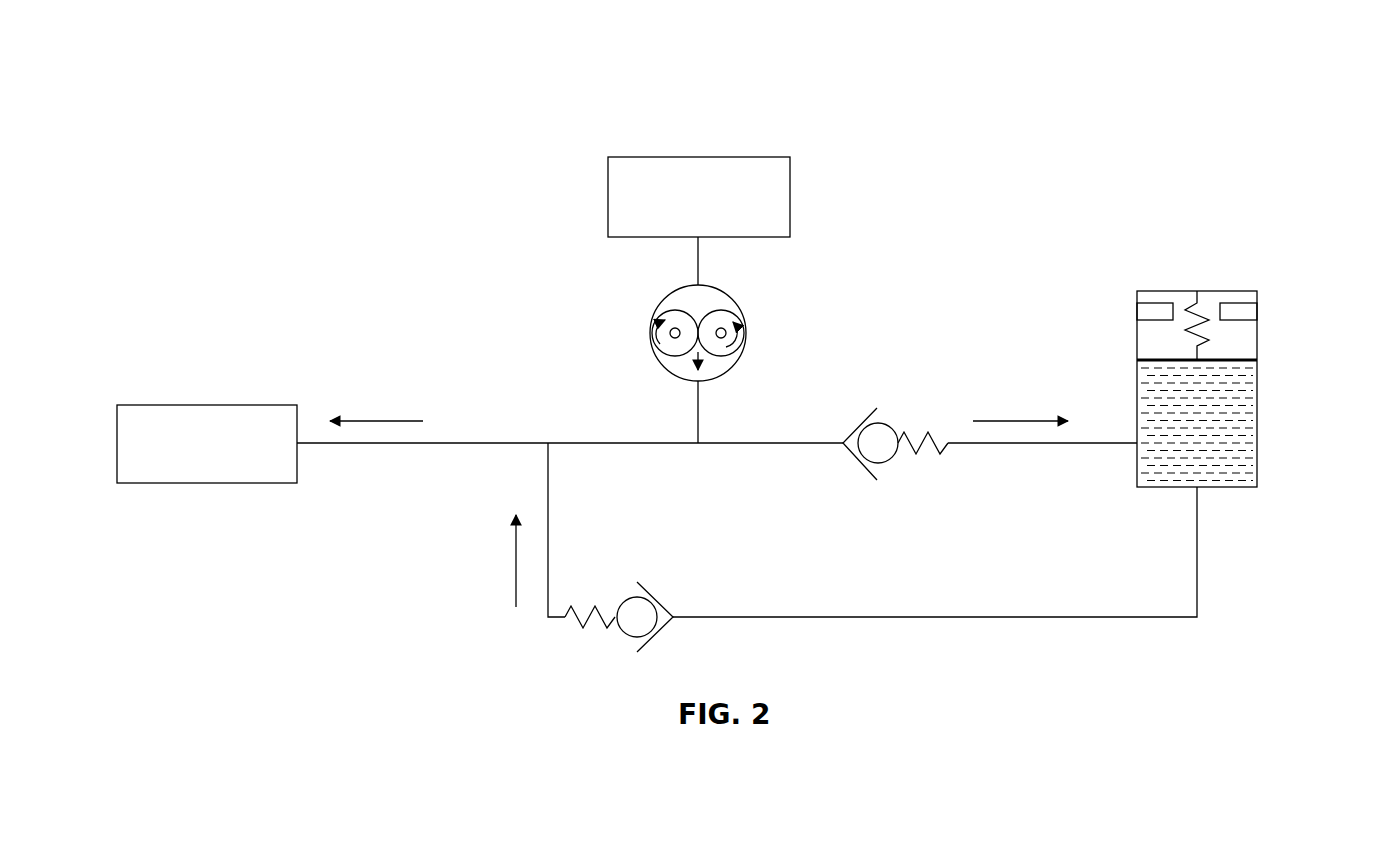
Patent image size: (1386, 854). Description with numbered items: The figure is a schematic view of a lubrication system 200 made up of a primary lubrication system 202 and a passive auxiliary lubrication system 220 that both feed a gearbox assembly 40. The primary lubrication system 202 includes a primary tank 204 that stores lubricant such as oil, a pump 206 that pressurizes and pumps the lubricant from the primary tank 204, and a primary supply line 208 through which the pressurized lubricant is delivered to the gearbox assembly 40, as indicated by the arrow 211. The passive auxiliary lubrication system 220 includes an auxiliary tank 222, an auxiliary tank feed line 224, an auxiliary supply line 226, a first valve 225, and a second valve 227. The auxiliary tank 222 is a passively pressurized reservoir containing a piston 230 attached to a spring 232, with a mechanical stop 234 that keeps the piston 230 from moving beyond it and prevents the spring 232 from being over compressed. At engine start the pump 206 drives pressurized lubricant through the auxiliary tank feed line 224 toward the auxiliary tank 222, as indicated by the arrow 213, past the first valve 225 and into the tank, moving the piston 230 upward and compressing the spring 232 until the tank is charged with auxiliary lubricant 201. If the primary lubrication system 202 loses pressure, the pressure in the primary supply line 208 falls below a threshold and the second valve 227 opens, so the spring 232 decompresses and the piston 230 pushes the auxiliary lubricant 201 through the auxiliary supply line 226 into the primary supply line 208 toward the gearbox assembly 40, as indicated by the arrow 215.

The lubrication system 200 is at (176, 100).
The primary lubrication system 202 is at (991, 130).
The passive auxiliary lubrication system 220 is at (1291, 170).
The gearbox assembly 40 is at (207, 405).
The primary tank 204 is at (608, 200).
The pump 206 is at (733, 300).
The primary supply line 208 is at (468, 443).
The arrow 211 is at (368, 421).
The arrow 213 is at (1025, 421).
The arrow 215 is at (514, 562).
The auxiliary tank feed line 224 is at (780, 443).
The first valve 225 is at (890, 427).
The auxiliary supply line 226 is at (932, 618).
The second valve 227 is at (622, 638).
The auxiliary lubricant 201 is at (1250, 453).
The auxiliary tank 222 is at (1148, 291).
The piston 230 is at (1247, 360).
The spring 232 is at (1195, 300).
The mechanical stop 234 is at (1240, 302).